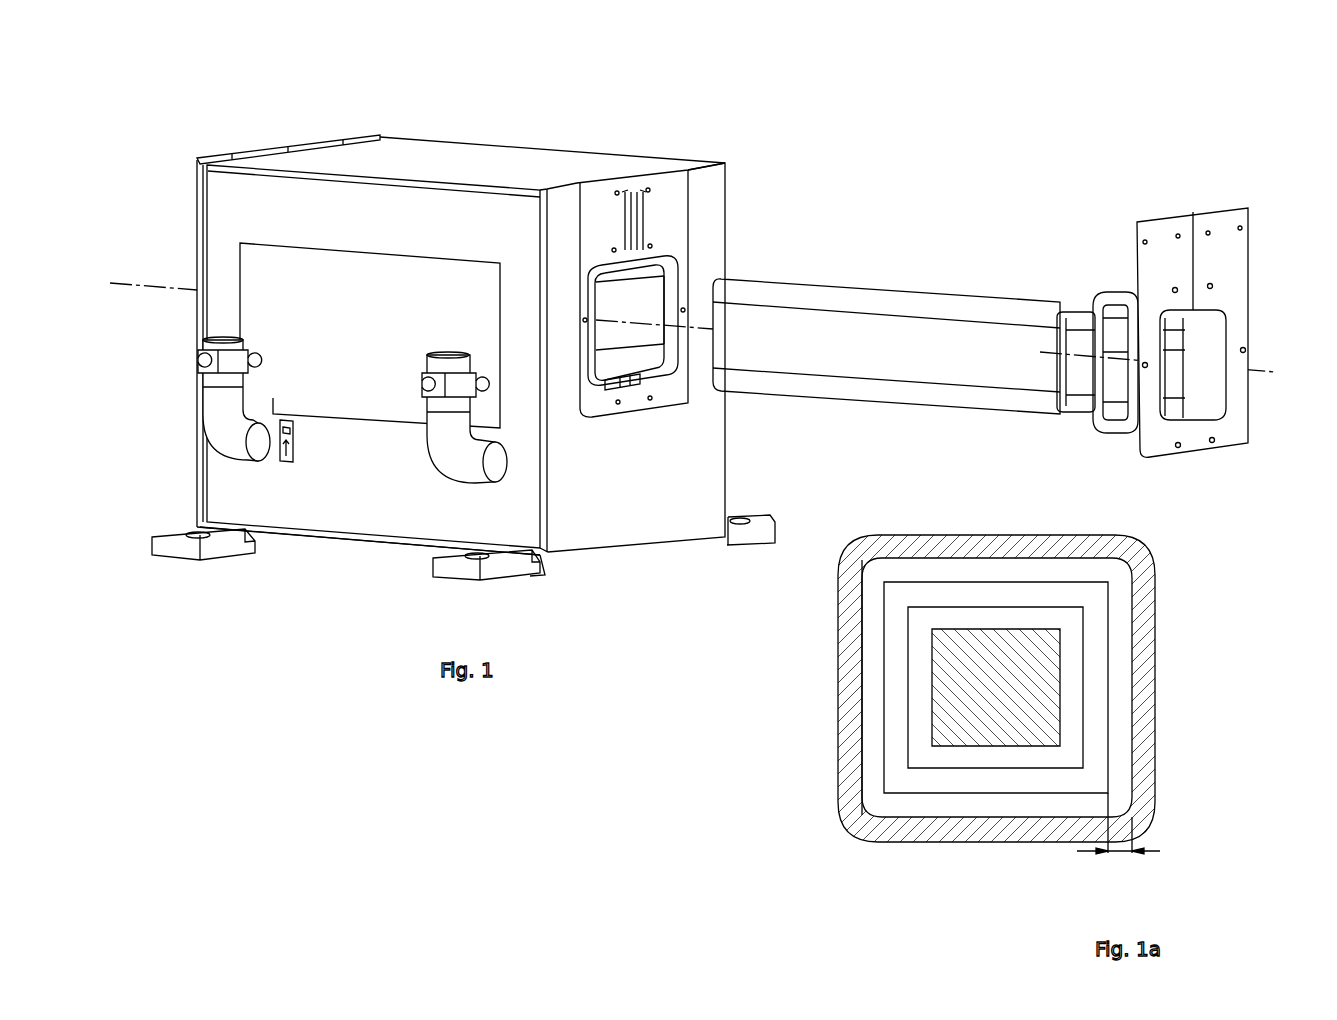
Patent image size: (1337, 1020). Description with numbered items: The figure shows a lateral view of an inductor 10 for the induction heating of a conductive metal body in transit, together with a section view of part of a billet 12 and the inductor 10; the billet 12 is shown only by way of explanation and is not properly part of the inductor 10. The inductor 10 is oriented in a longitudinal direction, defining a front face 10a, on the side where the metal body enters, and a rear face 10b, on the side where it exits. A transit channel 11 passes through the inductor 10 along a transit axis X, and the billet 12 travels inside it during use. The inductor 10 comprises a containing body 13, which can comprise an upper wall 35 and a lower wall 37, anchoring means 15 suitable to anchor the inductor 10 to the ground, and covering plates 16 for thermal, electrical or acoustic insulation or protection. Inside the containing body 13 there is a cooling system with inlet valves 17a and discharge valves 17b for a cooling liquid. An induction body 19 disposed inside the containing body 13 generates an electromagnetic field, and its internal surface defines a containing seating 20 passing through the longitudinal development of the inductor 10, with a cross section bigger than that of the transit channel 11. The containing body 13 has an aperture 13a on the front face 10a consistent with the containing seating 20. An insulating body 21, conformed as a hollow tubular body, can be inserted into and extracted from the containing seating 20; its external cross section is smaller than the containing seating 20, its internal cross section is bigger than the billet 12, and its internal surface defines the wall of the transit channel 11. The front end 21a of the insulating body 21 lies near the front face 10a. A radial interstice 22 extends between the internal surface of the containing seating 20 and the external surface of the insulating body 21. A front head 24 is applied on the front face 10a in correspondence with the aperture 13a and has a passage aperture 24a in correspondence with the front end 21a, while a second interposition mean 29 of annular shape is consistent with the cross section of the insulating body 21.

In FIG. 1, the inductor 10 is at (459, 308).
In FIG. 1, the front face 10a is at (662, 476).
In FIG. 1, the rear face 10b is at (197, 485).
In FIG. 1A, the transit channel 11 is at (978, 805).
In FIG. 1A, the billet 12 is at (940, 698).
In FIG. 1, the containing body 13 is at (665, 188).
In FIG. 1, the aperture 13a is at (680, 268).
In FIG. 1, the anchoring means 15 is at (222, 547).
In FIG. 1, the covering plates 16 is at (710, 172).
In FIG. 1, the inlet valve 17a is at (224, 365).
In FIG. 1, the discharge valve 17b is at (442, 387).
In FIG. 1A, the induction body 19 is at (1145, 577).
In FIG. 1, the containing seating 20 is at (650, 367).
In FIG. 1A, the containing seating 20 is at (1130, 732).
In FIG. 1, the insulating body 21 is at (865, 300).
In FIG. 1A, the insulating body 21 is at (1095, 632).
In FIG. 1, the front end 21a is at (1073, 412).
In FIG. 1A, the radial interstice 22 is at (1117, 851).
In FIG. 1, the front head 24 is at (1237, 317).
In FIG. 1, the passage aperture 24a is at (1215, 345).
In FIG. 1, the second interposition mean 29 is at (1124, 298).
In FIG. 1, the upper wall 35 is at (470, 170).
In FIG. 1, the lower wall 37 is at (363, 535).